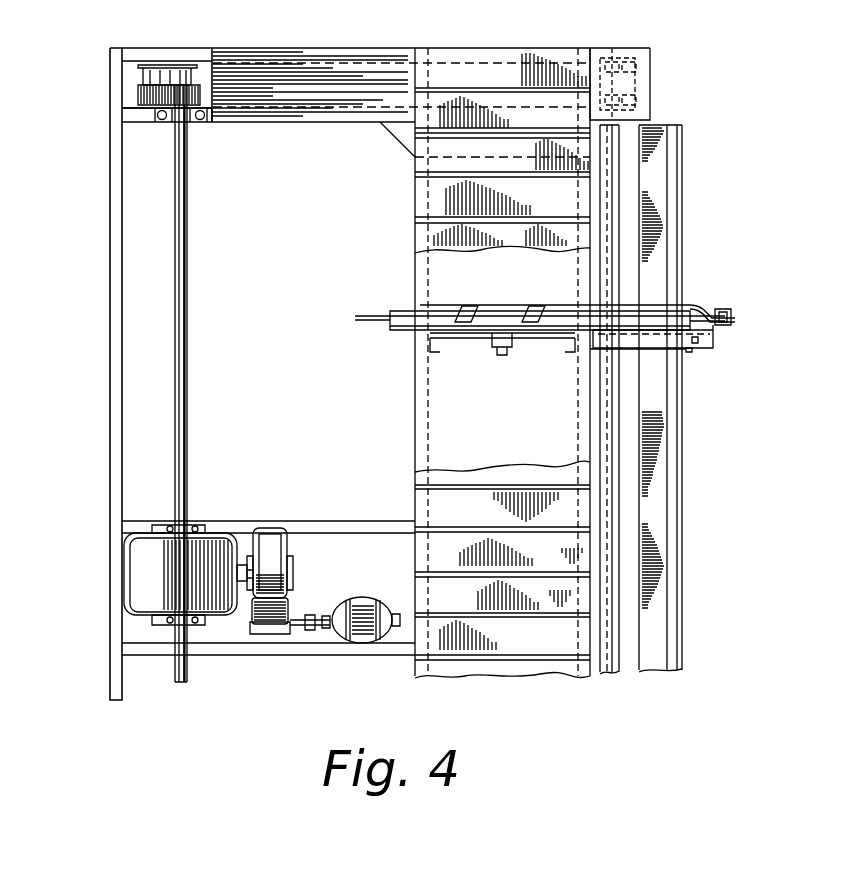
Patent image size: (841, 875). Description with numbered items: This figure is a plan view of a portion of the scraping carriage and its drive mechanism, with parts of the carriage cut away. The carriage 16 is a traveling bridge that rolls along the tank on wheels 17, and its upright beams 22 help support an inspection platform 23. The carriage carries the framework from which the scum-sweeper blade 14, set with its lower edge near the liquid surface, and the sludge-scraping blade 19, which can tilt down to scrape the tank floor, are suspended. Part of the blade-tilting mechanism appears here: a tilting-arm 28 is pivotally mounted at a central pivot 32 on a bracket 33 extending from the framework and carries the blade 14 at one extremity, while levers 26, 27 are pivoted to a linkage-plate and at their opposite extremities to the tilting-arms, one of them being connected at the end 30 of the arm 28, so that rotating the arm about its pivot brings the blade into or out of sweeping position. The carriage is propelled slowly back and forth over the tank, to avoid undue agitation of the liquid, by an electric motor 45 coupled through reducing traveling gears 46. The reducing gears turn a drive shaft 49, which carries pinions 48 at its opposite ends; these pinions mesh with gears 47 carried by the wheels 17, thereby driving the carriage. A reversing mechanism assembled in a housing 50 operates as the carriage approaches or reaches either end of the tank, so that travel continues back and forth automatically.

The blade 14 is at (668, 486).
The carriage 16 is at (299, 123).
The wheels 17 is at (165, 65).
The blade 19 is at (612, 673).
The beams 22 is at (426, 413).
The inspection platform 23 is at (502, 508).
The lever 26 is at (535, 309).
The lever 27 is at (468, 309).
The tilting-arm 28 is at (716, 338).
The end 30 is at (732, 316).
The pivot 32 is at (702, 308).
The bracket 33 is at (689, 352).
The electric motor 45 is at (362, 600).
The reducing traveling gears 46 is at (268, 540).
The gears 47 is at (140, 92).
The pinions 48 is at (210, 97).
The drive shaft 49 is at (190, 236).
The housing 50 is at (198, 538).